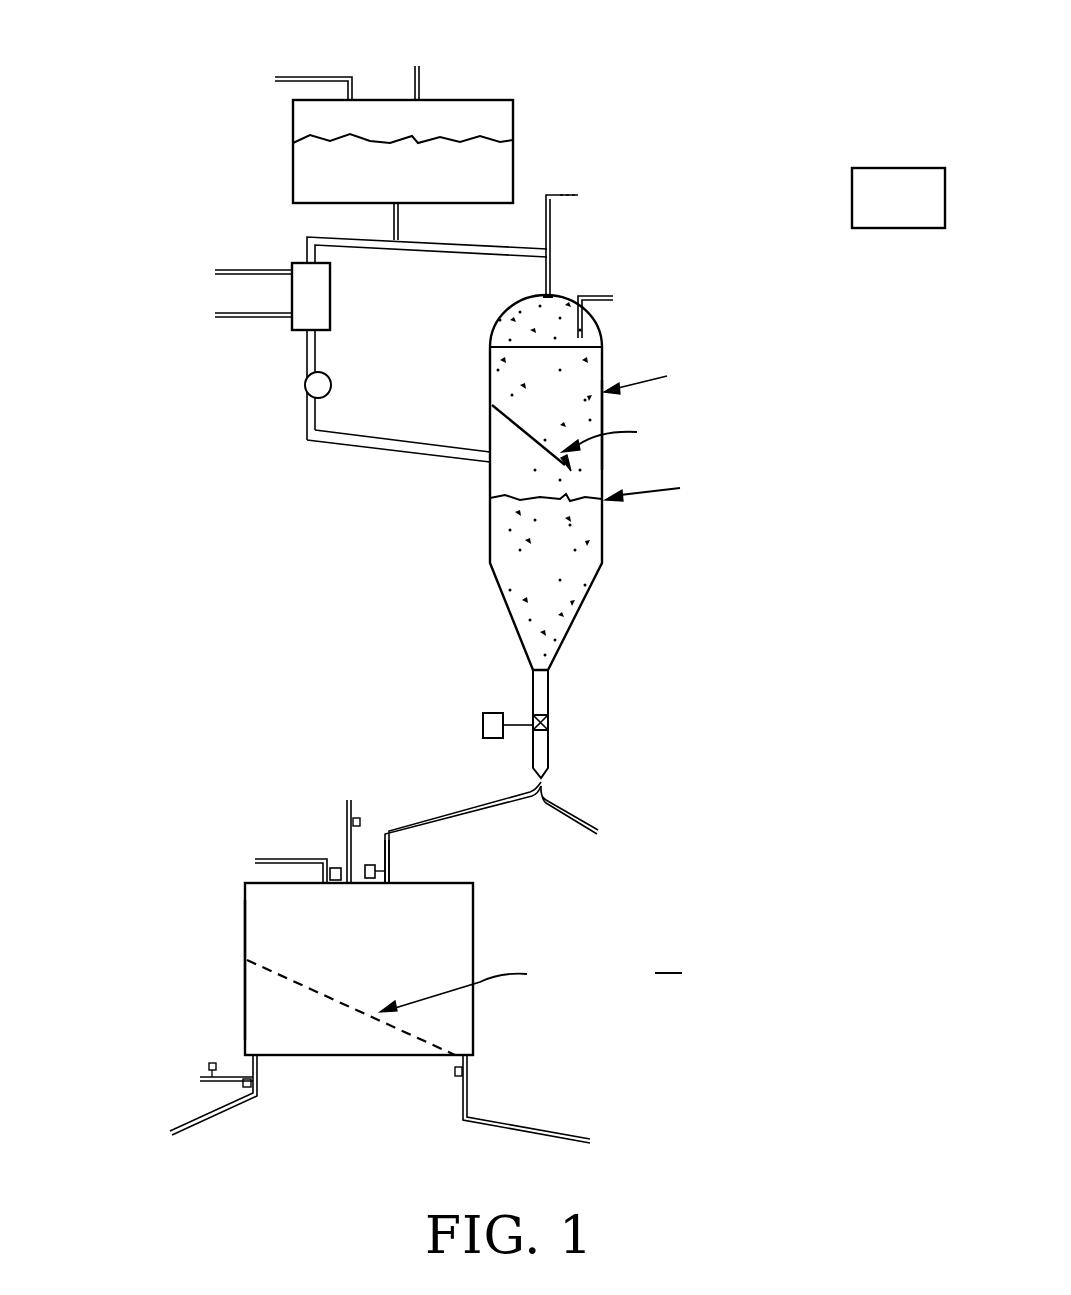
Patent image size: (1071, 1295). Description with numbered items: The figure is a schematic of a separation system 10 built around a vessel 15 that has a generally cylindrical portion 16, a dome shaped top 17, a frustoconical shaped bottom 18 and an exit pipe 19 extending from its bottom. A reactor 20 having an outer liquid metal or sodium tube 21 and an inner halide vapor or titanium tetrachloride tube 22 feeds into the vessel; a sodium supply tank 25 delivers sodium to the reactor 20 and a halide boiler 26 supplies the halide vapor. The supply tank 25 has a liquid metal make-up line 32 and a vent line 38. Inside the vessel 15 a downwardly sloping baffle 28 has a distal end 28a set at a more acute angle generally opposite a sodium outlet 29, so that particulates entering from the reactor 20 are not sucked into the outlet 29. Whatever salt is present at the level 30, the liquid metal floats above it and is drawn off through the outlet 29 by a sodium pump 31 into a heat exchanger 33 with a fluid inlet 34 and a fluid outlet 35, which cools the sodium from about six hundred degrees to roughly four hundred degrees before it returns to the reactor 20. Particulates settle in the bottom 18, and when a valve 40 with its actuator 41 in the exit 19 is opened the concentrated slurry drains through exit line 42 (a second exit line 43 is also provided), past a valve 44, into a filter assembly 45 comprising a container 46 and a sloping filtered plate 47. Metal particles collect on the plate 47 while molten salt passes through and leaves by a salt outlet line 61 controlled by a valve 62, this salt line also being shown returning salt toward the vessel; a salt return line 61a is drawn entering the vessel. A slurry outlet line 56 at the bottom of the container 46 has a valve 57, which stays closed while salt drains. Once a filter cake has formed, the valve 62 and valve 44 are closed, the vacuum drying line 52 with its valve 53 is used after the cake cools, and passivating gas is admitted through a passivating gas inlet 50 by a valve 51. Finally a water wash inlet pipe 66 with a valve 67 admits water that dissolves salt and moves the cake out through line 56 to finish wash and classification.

The separation system 10 is at (798, 114).
The vessel 15 is at (490, 481).
The generally cylindrical portion 16 is at (603, 480).
The dome shaped top 17 is at (578, 300).
The frustoconical shaped bottom 18 is at (580, 622).
The exit pipe 19 is at (550, 702).
The reactor 20 is at (545, 292).
The outer liquid metal or sodium tube 21 is at (555, 292).
The inner halide vapor or titanium tetrachloride tube 22 is at (545, 222).
The liquid metal or sodium supply tank 25 is at (513, 120).
The halide boiler 26 is at (872, 168).
The downwardly sloping baffle 28 is at (524, 422).
The distal end 28a is at (563, 462).
The sodium or liquid metal outlet 29 is at (400, 455).
The level 30 is at (639, 503).
The metal or sodium pump 31 is at (306, 392).
The liquid metal make-up line 32 is at (318, 76).
The heat exchanger 33 is at (293, 332).
The fluid inlet 34 is at (262, 268).
The fluid outlet 35 is at (252, 320).
The vent line 38 is at (422, 80).
The valve 40 is at (550, 723).
The actuator 41 is at (492, 712).
The exit line 42 is at (497, 800).
The exit line 43 is at (574, 810).
The valve 44 is at (368, 866).
The filter assembly 45 is at (480, 902).
The container 46 is at (245, 906).
The sloping filtered plate 47 is at (420, 1040).
The passivating gas inlet 50 is at (278, 858).
The valve 51 is at (334, 866).
The vacuum drying line 52 is at (388, 830).
The valve 53 is at (358, 816).
The slurry outlet line 56 is at (495, 1122).
The valve 57 is at (453, 1072).
The salt outlet line 61 is at (232, 1118).
The salt return line 61a is at (612, 298).
The valve 62 is at (230, 1087).
The water wash inlet pipe 66 is at (245, 1078).
The valve 67 is at (210, 1064).